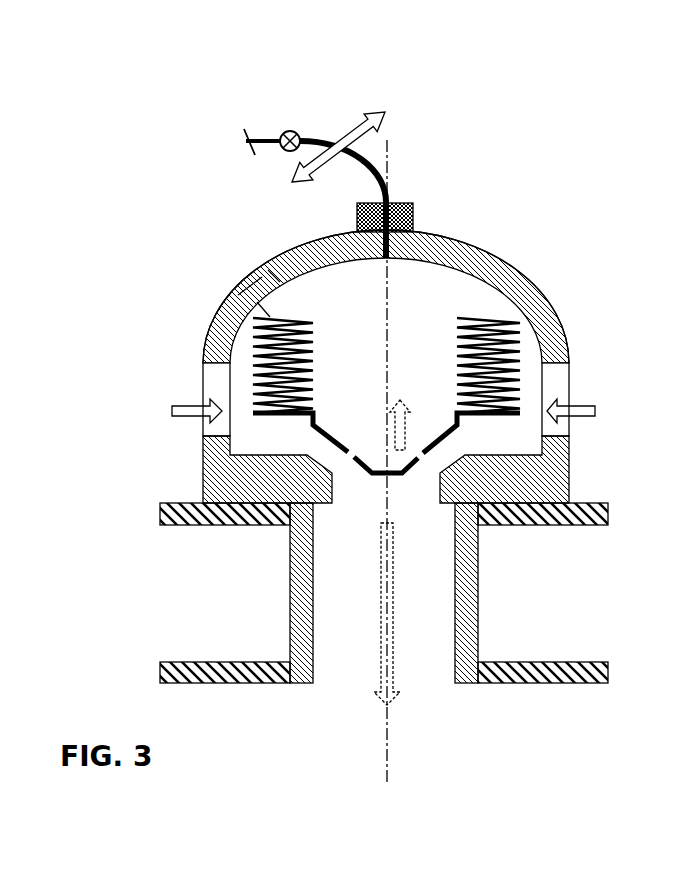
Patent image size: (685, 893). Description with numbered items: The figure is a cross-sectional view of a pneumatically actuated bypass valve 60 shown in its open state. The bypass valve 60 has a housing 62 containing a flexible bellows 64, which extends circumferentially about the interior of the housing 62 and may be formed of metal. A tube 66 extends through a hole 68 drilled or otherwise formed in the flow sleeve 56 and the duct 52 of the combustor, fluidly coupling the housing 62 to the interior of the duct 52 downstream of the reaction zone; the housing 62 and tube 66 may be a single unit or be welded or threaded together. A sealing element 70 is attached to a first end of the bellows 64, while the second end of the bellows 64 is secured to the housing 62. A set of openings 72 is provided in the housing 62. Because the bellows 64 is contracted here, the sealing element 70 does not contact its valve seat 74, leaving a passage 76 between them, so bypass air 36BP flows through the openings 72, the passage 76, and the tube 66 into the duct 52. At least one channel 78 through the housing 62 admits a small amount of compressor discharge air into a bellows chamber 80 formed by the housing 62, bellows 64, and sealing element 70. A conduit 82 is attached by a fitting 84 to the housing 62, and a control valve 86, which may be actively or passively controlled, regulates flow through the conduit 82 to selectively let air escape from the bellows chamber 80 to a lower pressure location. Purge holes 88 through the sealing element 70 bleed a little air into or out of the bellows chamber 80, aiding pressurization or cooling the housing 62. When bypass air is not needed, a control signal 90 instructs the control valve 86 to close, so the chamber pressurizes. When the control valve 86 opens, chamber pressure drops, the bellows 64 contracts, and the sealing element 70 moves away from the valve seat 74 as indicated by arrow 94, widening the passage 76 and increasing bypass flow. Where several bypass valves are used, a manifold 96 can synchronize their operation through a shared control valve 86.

The bypass valve 60 is at (96, 144).
The housing 62 is at (493, 252).
The bellows 64 is at (233, 293).
The tube 66 is at (455, 610).
The hole 68 is at (323, 691).
The sealing element 70 is at (338, 440).
The set of openings 72 is at (189, 382).
The valve seat 74 is at (320, 460).
The passage 76 is at (297, 443).
The channel 78 is at (270, 265).
The bellows chamber 80 is at (397, 329).
The conduit 82 is at (362, 158).
The fitting 84 is at (413, 207).
The control valve 86 is at (298, 132).
The purge holes 88 is at (419, 470).
The control signal 90 is at (284, 117).
The arrow 94 is at (405, 423).
The manifold 96 is at (363, 115).
The flow sleeve 56 is at (528, 527).
The duct 52 is at (522, 685).
The bypass air 36BP is at (382, 562).